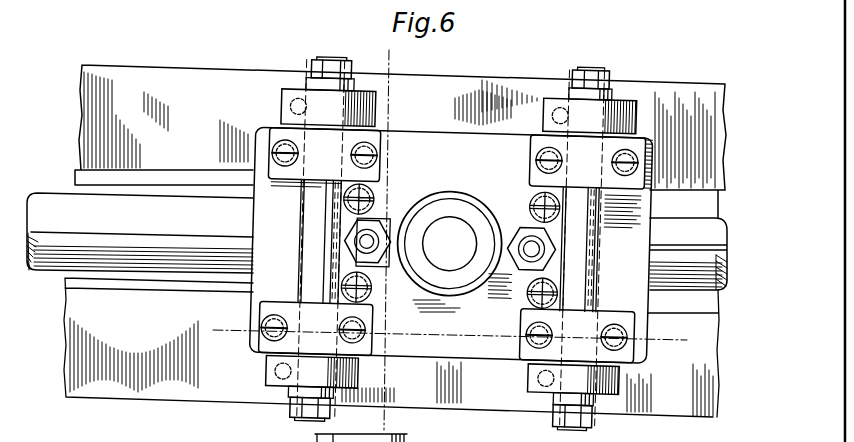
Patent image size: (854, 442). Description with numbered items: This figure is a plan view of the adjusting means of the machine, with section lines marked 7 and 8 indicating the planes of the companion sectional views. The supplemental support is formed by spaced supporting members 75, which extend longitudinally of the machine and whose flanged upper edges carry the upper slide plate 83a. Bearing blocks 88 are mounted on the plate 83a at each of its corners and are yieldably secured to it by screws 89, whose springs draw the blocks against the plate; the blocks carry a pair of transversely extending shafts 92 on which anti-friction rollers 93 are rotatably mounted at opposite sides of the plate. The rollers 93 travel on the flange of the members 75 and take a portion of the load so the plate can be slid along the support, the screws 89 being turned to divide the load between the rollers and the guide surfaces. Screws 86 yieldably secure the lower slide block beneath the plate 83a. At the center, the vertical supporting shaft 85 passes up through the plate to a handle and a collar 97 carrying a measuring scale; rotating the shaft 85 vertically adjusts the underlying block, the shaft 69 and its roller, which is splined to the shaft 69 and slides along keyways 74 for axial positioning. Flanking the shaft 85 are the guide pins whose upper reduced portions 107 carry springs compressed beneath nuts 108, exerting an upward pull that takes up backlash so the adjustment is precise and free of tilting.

The supporting member 75 is at (170, 87).
The keyway 74 is at (137, 230).
The shaft 69 is at (43, 263).
The upper slide plate 83a is at (478, 354).
The transversely extending shaft 92 is at (310, 240).
The bearing block 88 is at (383, 145).
The screw 89 is at (380, 158).
The anti-friction roller 93 is at (282, 100).
The screw 86 is at (375, 200).
The nut 108 is at (385, 220).
The vertical supporting shaft 85 is at (457, 269).
The upper reduced portion 107 is at (532, 246).
The collar 97 is at (427, 300).
The section line 8- 8 is at (397, 66).
The section line 7- 7 is at (213, 357).